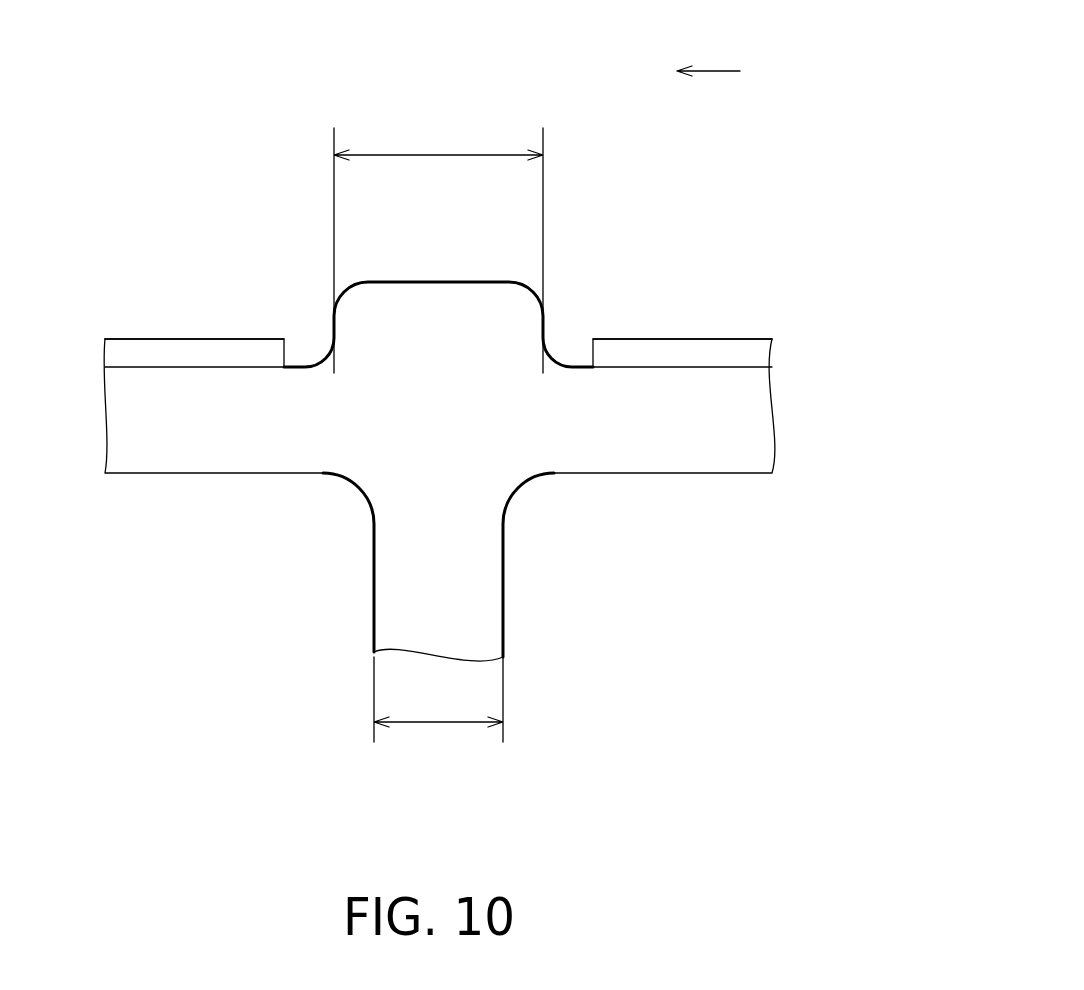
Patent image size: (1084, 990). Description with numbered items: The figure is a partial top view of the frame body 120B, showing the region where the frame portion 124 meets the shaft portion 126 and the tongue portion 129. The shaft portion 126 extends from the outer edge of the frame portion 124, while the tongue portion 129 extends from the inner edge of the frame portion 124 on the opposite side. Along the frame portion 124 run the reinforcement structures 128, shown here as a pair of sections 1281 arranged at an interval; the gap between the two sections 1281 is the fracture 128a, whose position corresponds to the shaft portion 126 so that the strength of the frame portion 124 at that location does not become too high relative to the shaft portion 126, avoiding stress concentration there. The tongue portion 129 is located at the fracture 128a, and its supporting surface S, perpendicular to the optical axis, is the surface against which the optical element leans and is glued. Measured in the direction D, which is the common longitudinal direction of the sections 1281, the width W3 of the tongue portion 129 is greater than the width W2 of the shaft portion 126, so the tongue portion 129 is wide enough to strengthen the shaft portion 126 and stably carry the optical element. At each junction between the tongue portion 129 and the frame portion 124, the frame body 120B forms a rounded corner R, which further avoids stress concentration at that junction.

The frame body 120B is at (805, 407).
The frame portion 124 is at (723, 458).
The shaft portion 126 is at (492, 617).
The reinforcement structure 128 is at (212, 671).
The sections 1281 is at (185, 350).
The fracture 128a is at (302, 350).
The tongue portion 129 is at (387, 295).
The supporting surface S is at (445, 290).
The rounded corner R is at (560, 342).
The width of the shaft portion W2 is at (438, 711).
The width of the tongue portion W3 is at (438, 246).
The direction D is at (708, 53).